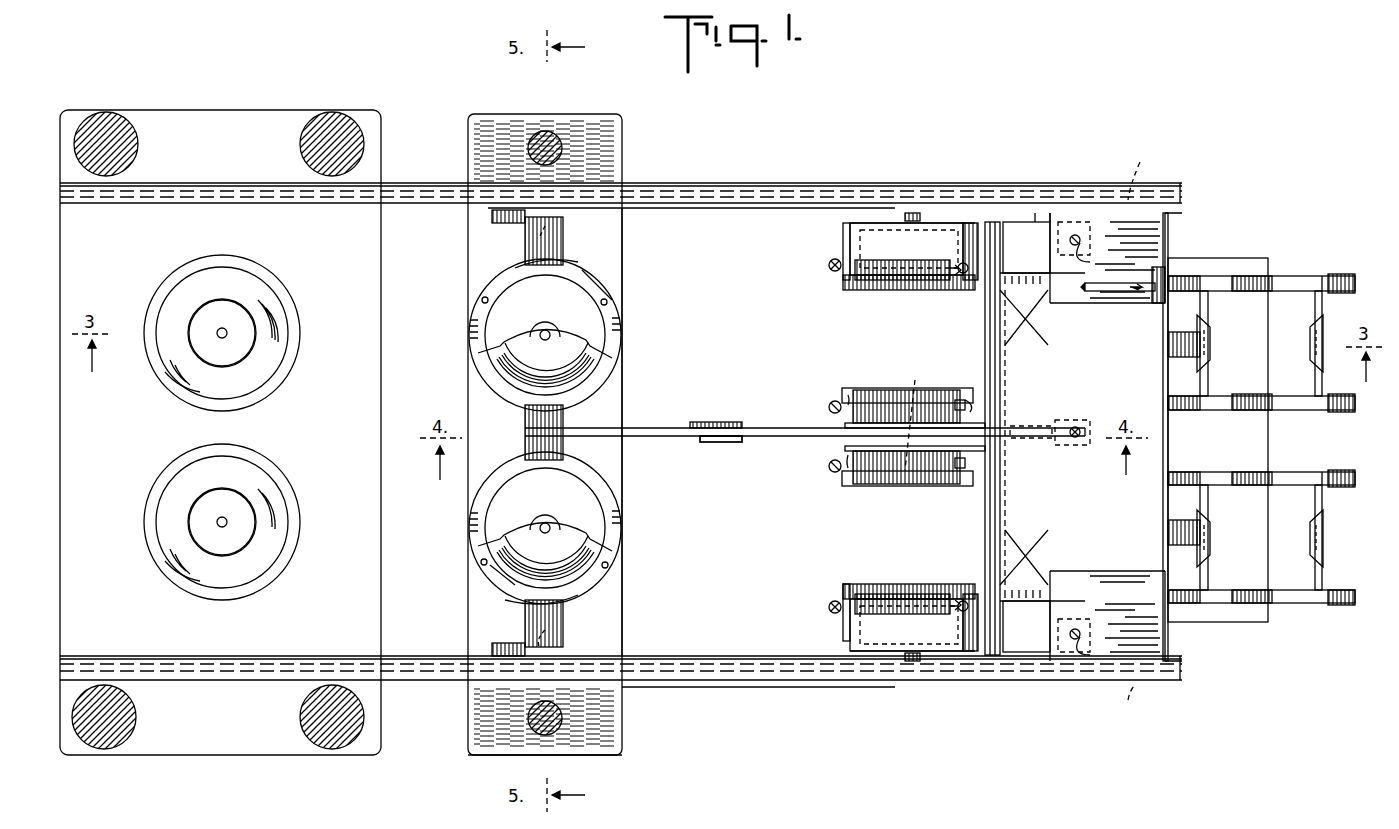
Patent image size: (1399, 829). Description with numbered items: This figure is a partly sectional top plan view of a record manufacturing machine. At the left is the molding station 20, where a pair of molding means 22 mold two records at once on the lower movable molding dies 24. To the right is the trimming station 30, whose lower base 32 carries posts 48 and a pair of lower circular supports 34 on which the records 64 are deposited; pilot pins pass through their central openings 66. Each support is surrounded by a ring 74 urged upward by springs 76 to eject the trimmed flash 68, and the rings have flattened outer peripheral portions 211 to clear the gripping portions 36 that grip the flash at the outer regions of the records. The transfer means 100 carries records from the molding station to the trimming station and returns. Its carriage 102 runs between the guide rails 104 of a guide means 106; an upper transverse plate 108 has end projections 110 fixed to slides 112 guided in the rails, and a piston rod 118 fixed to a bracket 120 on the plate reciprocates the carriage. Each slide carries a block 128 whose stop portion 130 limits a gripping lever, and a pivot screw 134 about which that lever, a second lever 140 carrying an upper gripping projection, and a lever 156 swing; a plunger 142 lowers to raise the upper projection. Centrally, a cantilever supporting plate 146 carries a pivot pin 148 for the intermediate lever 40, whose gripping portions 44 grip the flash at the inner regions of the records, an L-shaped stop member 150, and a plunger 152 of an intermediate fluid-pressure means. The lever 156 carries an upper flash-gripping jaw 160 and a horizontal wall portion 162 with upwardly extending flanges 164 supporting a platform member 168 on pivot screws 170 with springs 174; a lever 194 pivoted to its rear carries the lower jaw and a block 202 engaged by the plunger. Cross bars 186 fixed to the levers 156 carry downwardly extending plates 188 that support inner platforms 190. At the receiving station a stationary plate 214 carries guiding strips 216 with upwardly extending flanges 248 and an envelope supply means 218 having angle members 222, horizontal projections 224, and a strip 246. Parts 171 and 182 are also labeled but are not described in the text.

The molding station 20 is at (165, 766).
The molding means 22 is at (150, 378).
The lower movable molding dies 24 is at (277, 356).
The trimming station 30 is at (465, 755).
The lower base 32 is at (612, 722).
The lower circular supports 34 is at (585, 330).
The gripping portions 36 is at (525, 248).
The intermediate lever 40 is at (655, 425).
The gripping portions 44 is at (530, 447).
The posts 48 is at (550, 140).
The records 64 is at (510, 362).
The central openings 66 is at (515, 338).
The flash 68 is at (505, 380).
The rings 74 is at (478, 323).
The springs 76 is at (480, 300).
The transfer means 100 is at (1175, 228).
The carriage 102 is at (1110, 374).
The guide rails 104 is at (1100, 185).
The guide means 106 is at (1170, 205).
The upper transverse plate 108 is at (1168, 237).
The downwardly extending projections 110 is at (1098, 247).
The elongated slides 112 is at (1152, 436).
The piston rod 118 is at (1108, 292).
The bracket 120 is at (1155, 300).
The block 128 is at (495, 222).
The stop portion 130 is at (535, 240).
The pivot screw 134 is at (940, 200).
The second lever 140 is at (680, 208).
The plunger 142 is at (1095, 262).
The cantilever supporting plate 146 is at (768, 405).
The pivot pin 148 is at (933, 413).
The stop member 150 is at (740, 443).
The plunger 152 is at (1077, 425).
The lever 156 is at (1042, 215).
The upper flash-gripping jaw 160 is at (860, 300).
The horizontal wall portion 162 is at (895, 235).
The upwardly extending flanges 164 is at (843, 242).
The platform member 168 is at (890, 272).
The pivot screws 170 is at (910, 285).
The screw 171 is at (828, 267).
The springs 174 is at (958, 278).
The guide rail 182 is at (740, 165).
The cross bars 186 is at (1008, 347).
The downwardly extending plates 188 is at (860, 395).
The platforms 190 is at (912, 398).
The lever 194 is at (1025, 232).
The blocks 202 is at (1060, 222).
The flattened outer peripheral portions 211 is at (572, 270).
The stationary plate 214 is at (1225, 454).
The guiding strips 216 is at (985, 380).
The envelope supply means 218 is at (1345, 272).
The angle members 222 is at (1360, 445).
The horizontal projections 224 is at (1258, 330).
The strip 246 is at (1172, 342).
The flanges 248 is at (1045, 302).